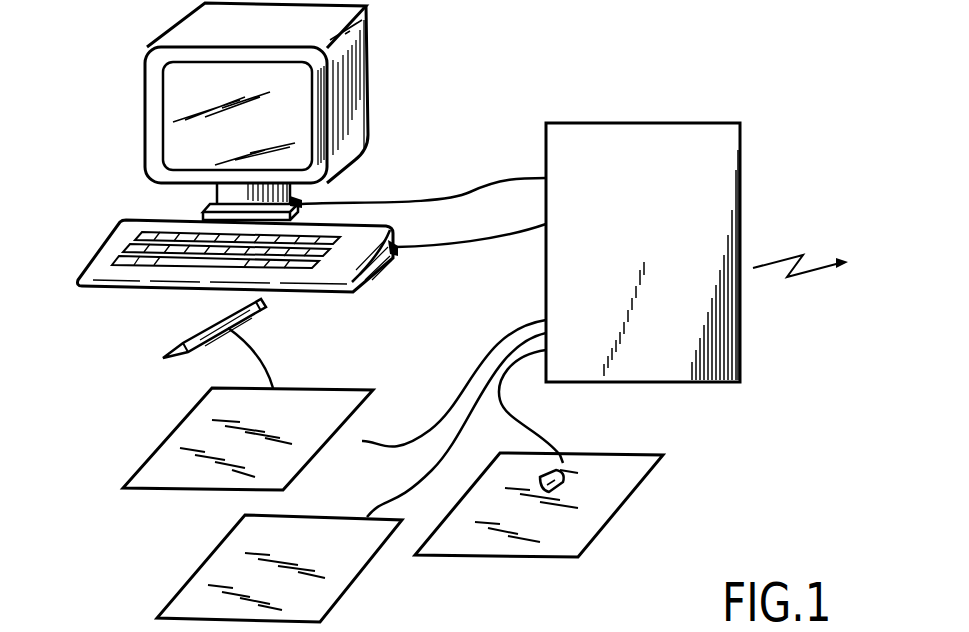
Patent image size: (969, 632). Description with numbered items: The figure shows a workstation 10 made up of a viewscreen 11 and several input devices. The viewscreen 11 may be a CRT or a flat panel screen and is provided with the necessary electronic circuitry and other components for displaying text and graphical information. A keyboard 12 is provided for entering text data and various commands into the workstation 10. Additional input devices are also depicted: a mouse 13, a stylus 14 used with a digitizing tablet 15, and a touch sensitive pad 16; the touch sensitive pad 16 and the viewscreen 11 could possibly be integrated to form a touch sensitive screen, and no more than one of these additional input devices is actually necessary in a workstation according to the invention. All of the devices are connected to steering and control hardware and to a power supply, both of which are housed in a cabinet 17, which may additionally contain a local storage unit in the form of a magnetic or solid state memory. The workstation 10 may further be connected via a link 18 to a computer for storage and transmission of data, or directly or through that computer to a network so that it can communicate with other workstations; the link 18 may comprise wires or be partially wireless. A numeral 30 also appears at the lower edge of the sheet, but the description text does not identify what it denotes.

The workstation 10 is at (118, 184).
The viewscreen 11 is at (153, 83).
The keyboard 12 is at (97, 252).
The mouse 13 is at (560, 474).
The stylus 14 is at (185, 336).
The digitizing tablet 15 is at (319, 400).
The touch sensitive pad 16 is at (200, 580).
The cabinet 17 is at (597, 128).
The link 18 is at (800, 280).
The reference element 30 is at (620, 629).